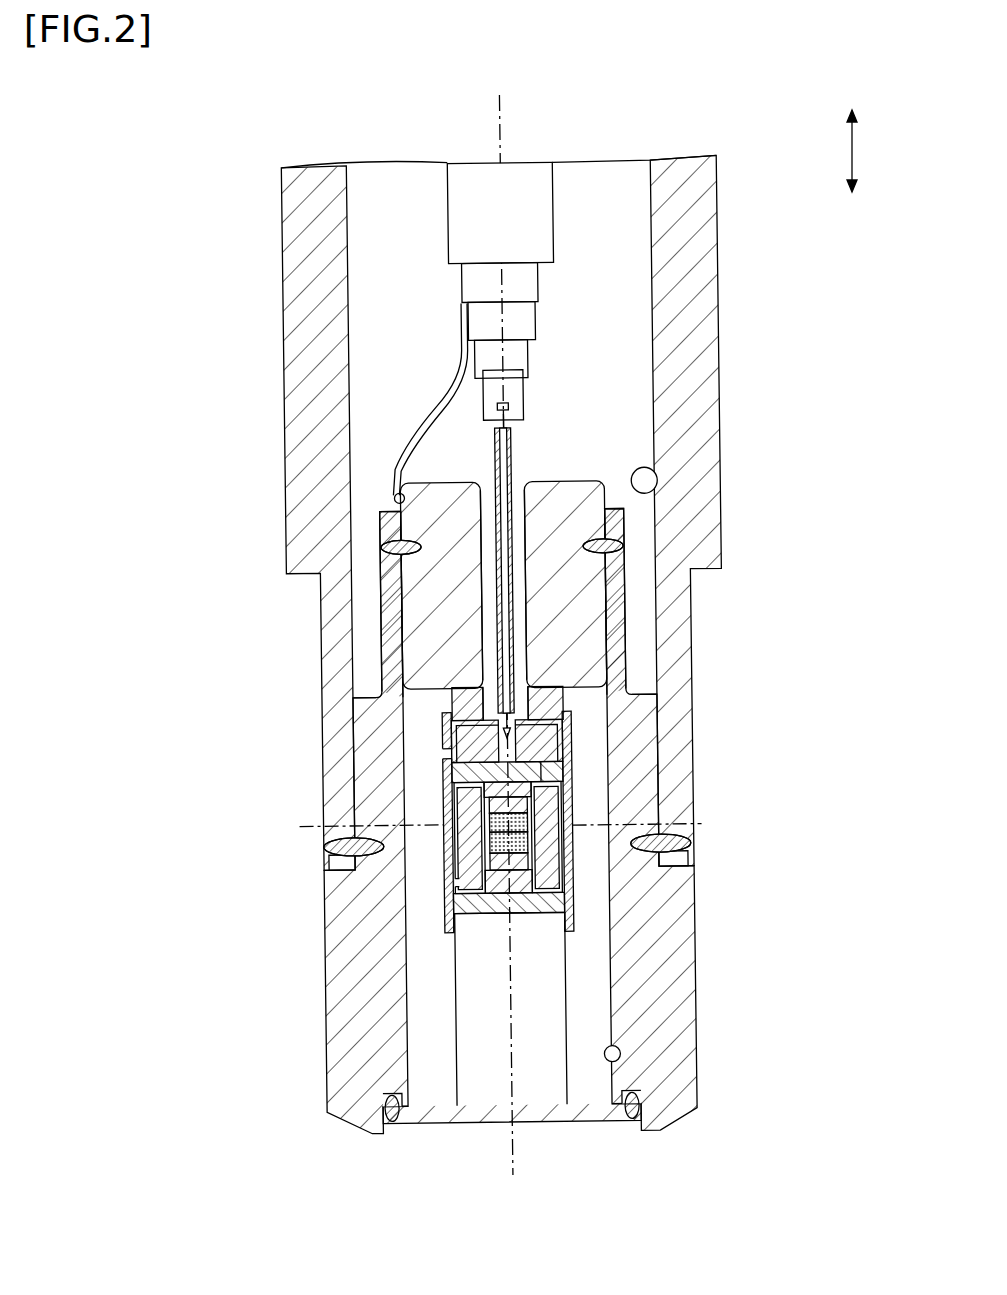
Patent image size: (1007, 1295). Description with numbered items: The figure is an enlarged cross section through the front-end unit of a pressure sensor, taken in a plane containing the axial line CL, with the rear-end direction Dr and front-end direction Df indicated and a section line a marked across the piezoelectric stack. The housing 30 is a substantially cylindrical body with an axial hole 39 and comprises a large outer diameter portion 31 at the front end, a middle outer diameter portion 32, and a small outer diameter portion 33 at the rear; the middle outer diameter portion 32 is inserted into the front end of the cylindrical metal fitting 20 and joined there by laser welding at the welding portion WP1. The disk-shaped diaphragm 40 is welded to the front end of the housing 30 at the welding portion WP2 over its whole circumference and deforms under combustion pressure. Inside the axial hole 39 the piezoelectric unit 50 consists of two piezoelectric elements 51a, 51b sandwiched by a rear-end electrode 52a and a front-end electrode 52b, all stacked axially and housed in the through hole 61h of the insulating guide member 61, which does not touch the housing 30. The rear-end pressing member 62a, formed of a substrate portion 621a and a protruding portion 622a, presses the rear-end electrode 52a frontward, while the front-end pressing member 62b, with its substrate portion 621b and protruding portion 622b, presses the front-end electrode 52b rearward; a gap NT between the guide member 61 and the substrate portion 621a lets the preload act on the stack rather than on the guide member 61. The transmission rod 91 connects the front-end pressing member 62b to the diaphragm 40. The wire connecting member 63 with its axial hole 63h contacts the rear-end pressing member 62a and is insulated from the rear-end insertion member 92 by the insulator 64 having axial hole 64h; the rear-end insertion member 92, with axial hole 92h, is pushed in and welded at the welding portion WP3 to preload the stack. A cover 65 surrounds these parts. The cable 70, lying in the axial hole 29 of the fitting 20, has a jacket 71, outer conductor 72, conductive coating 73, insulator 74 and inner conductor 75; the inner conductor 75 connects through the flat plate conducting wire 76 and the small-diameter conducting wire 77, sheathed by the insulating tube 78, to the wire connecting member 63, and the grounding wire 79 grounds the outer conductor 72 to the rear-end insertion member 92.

The cylindrical metal fitting 20 is at (547, 512).
The axial hole 29 is at (660, 495).
The housing 30 is at (560, 820).
The large outer diameter portion 31 is at (686, 1006).
The middle outer diameter portion 32 is at (643, 701).
The small outer diameter portion 33 is at (621, 642).
The axial hole 39 is at (610, 1055).
The diaphragm 40 is at (425, 1125).
The piezoelectric unit 50 is at (657, 857).
The piezoelectric element 51a is at (523, 840).
The piezoelectric element 51b is at (523, 868).
The rear-end electrode 52a is at (519, 805).
The front-end electrode 52b is at (518, 890).
The guide member 61 is at (483, 846).
The through hole 61h is at (450, 883).
The rear-end pressing member 62a is at (462, 762).
The front-end pressing member 62b is at (493, 937).
The substrate portion 621a is at (453, 772).
The substrate portion 621b is at (467, 925).
The protruding portion 622a is at (449, 790).
The protruding portion 622b is at (465, 905).
The wire connecting member 63 is at (520, 817).
The axial hole 63h is at (449, 752).
The insulator 64 is at (406, 682).
The axial hole 64h is at (485, 709).
The cover 65 is at (485, 805).
The cable 70 is at (503, 450).
The jacket 71 is at (461, 214).
The outer conductor 72 is at (468, 289).
The conductive coating 73 is at (537, 310).
The insulator 74 is at (530, 330).
The inner conductor 75 is at (529, 357).
The flat plate conducting wire 76 is at (520, 394).
The small-diameter conducting wire 77 is at (516, 451).
The insulating tube 78 is at (500, 470).
The grounding wire 79 is at (424, 398).
The transmission rod 91 is at (468, 1000).
The rear-end insertion member 92 is at (501, 585).
The axial hole 92h is at (498, 628).
The welding portion WP1 is at (338, 852).
The welding portion WP2 is at (386, 1122).
The welding portion WP3 is at (419, 540).
The gap NT is at (551, 775).
The axial line CL is at (512, 108).
The section line a- a is at (501, 825).
The rear-end direction Dr is at (852, 135).
The front-end direction Df is at (853, 200).